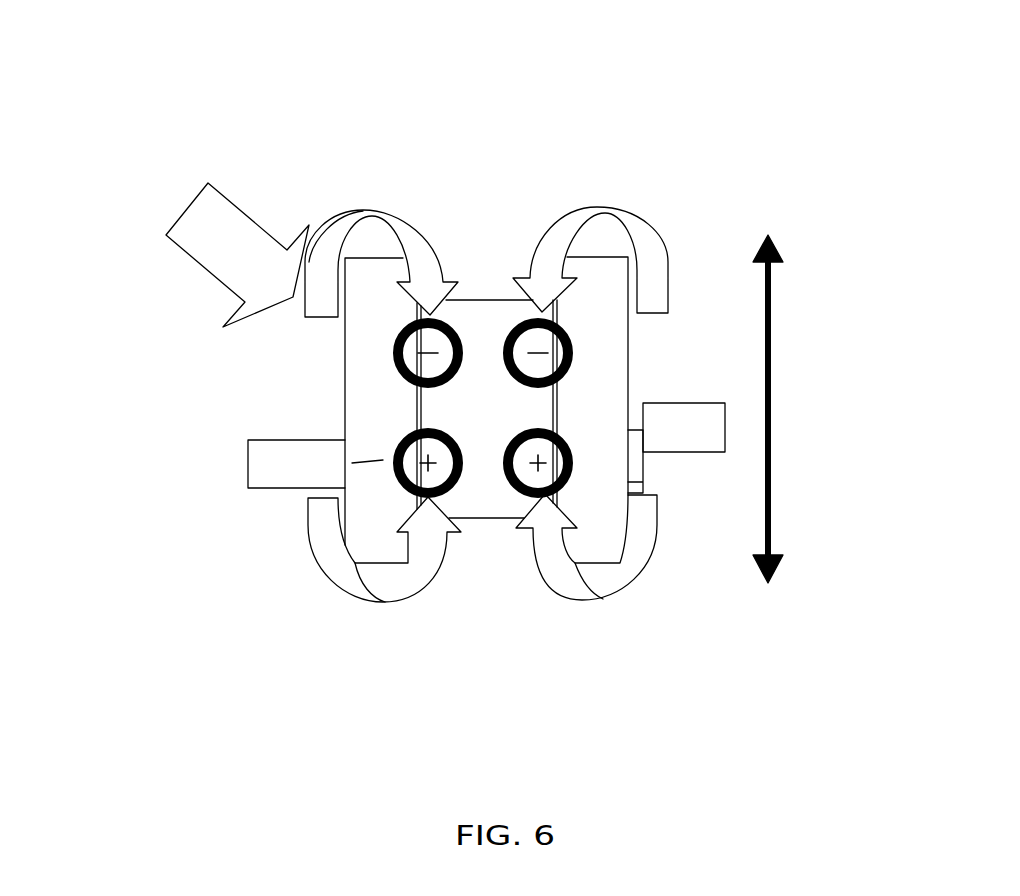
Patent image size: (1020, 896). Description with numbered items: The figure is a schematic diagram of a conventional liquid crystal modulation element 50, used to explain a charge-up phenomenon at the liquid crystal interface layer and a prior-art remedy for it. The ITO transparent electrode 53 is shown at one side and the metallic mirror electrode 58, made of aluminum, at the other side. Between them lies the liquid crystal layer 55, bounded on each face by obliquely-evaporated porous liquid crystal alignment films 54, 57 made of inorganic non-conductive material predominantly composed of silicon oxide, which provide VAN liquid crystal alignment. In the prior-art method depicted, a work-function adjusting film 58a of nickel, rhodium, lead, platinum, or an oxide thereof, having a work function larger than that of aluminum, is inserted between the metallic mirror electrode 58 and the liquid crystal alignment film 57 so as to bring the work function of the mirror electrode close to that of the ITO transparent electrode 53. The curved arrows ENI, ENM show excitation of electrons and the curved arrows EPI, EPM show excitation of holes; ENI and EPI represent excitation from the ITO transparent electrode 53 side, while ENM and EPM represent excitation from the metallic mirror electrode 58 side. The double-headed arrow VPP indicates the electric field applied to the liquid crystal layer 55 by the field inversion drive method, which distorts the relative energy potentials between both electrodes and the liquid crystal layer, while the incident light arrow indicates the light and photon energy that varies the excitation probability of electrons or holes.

The photoelectric conversion element 50 is at (464, 23).
The ITO transparent electrode 53 is at (266, 448).
The liquid crystal alignment film 54 is at (362, 295).
The liquid crystal layer 55 is at (495, 332).
The liquid crystal alignment film 57 is at (593, 287).
The metallic mirror electrode 58 is at (687, 420).
The work-function adjusting film 58a is at (638, 472).
The excitation of electrons ENI is at (357, 222).
The excitation of electrons ENM is at (567, 225).
The excitation of holes EPI is at (347, 590).
The excitation of holes EPM is at (608, 595).
The electric field applied to the liquid crystal layer VPP is at (770, 358).